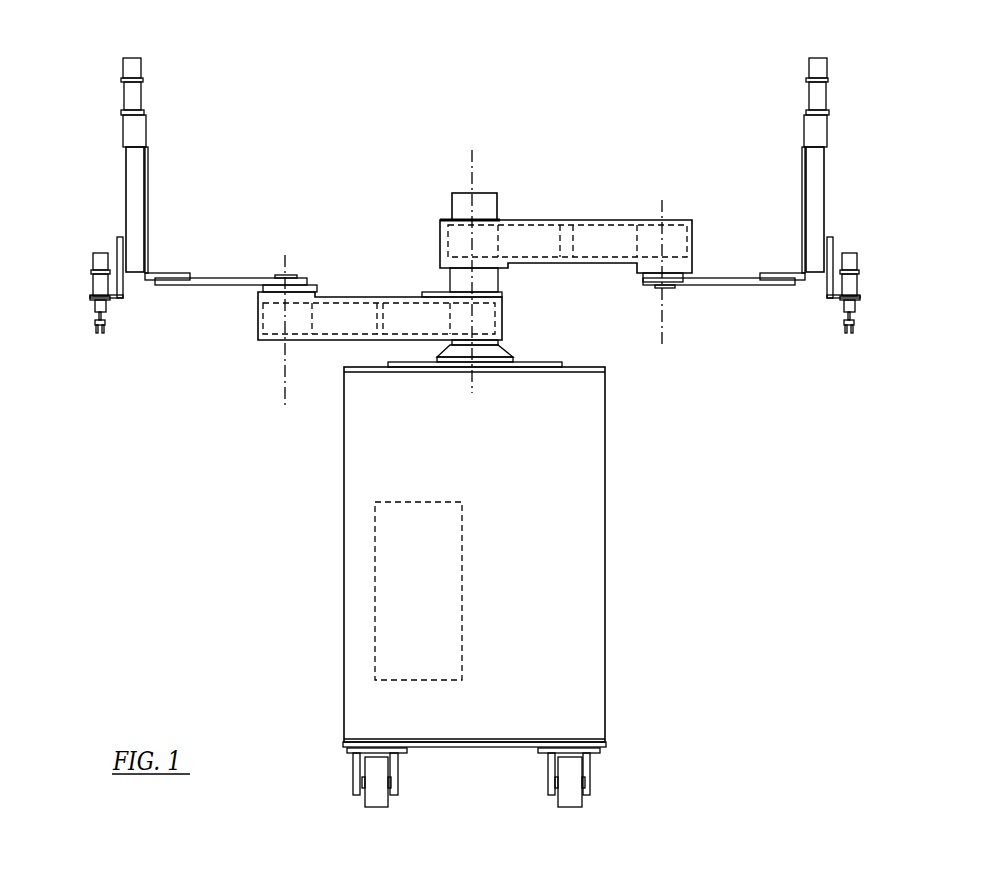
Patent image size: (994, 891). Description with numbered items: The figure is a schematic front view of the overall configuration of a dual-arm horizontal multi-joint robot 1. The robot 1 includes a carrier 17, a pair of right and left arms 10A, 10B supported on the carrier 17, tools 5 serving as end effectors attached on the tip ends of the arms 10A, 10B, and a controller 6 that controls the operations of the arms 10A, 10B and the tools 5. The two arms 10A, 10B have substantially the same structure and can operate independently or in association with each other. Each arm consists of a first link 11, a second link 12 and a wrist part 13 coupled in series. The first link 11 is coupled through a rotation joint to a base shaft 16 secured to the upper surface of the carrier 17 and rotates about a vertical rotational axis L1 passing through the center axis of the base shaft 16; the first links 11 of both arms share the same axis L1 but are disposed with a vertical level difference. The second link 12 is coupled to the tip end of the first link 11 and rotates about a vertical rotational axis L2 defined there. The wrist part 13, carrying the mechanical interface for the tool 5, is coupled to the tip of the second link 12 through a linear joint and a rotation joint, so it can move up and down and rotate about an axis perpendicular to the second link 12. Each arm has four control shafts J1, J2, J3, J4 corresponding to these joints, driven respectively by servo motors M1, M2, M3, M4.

The robot 1 is at (476, 411).
The tool 5 is at (97, 334).
The controller 6 is at (375, 592).
The right arm 10A is at (671, 185).
The left arm 10B is at (236, 185).
The first link 11 is at (598, 219).
The second link 12 is at (190, 286).
The wrist part 13 is at (107, 242).
The base shaft 16 is at (498, 282).
The carrier 17 is at (606, 532).
The first control shaft J1 is at (445, 226).
The second control shaft J2 is at (698, 228).
The third control shaft J3 is at (123, 168).
The fourth control shaft J4 is at (96, 320).
The first servo motor M1 is at (530, 218).
The second servo motor M2 is at (613, 218).
The third servo motor M3 is at (122, 67).
The fourth servo motor M4 is at (90, 278).
The rotational axis L1 is at (470, 258).
The rotational axis L2 is at (473, 323).